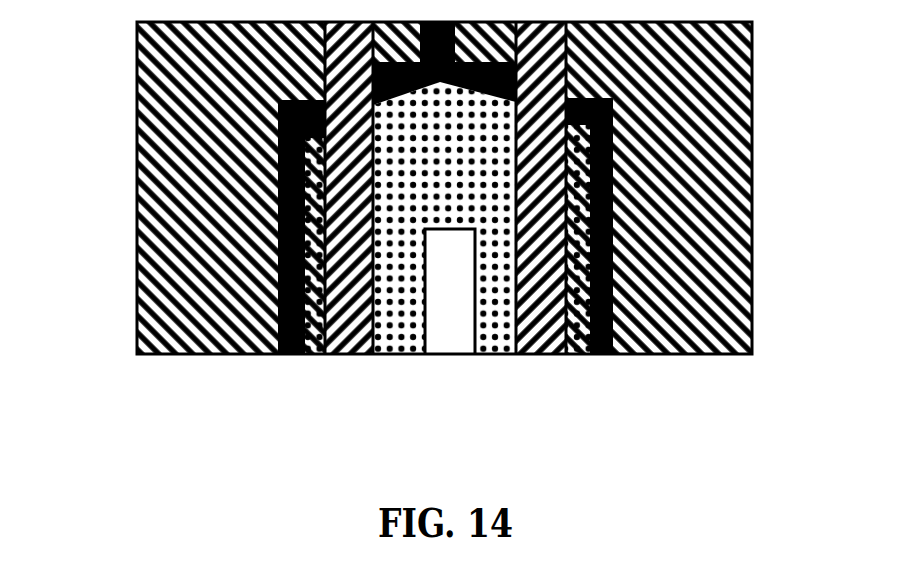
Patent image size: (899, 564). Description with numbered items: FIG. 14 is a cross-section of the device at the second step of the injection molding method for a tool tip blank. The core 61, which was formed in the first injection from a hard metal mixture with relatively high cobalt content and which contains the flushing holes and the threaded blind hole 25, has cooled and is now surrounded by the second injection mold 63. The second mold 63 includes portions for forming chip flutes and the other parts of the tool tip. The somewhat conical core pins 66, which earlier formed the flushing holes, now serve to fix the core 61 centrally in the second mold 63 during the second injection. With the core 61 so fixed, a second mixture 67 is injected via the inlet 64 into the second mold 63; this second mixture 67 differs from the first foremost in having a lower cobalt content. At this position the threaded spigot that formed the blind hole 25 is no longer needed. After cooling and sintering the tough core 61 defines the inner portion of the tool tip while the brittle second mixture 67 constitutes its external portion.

The second injection mold 63 is at (697, 177).
The inlet 64 is at (445, 32).
The core 61 is at (398, 313).
The blind hole 25 is at (473, 322).
The core pins 66 is at (548, 144).
The second mixture 67 is at (290, 296).